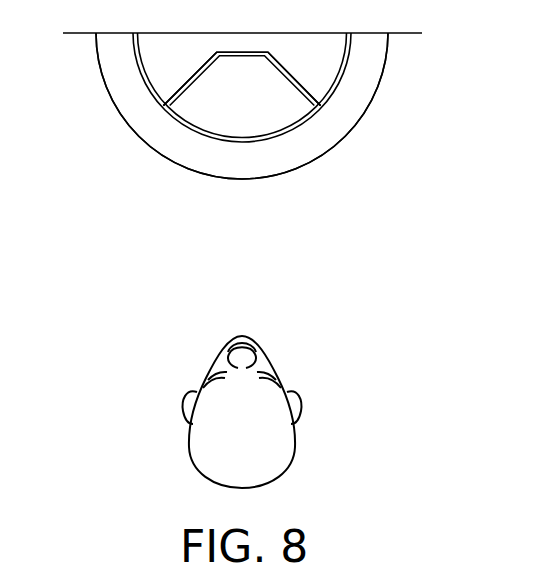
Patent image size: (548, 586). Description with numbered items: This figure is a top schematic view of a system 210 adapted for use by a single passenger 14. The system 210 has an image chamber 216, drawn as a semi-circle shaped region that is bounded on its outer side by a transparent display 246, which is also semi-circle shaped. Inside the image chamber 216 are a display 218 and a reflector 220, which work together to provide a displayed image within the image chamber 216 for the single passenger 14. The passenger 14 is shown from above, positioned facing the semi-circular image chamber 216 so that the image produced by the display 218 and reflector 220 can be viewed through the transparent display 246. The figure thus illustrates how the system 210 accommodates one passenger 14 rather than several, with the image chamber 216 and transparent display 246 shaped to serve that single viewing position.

The system 210 is at (121, 177).
The transparent display 246 is at (253, 178).
The image chamber 216 is at (328, 137).
The display 218 is at (288, 71).
The reflector 220 is at (262, 106).
The passenger 14 is at (219, 437).